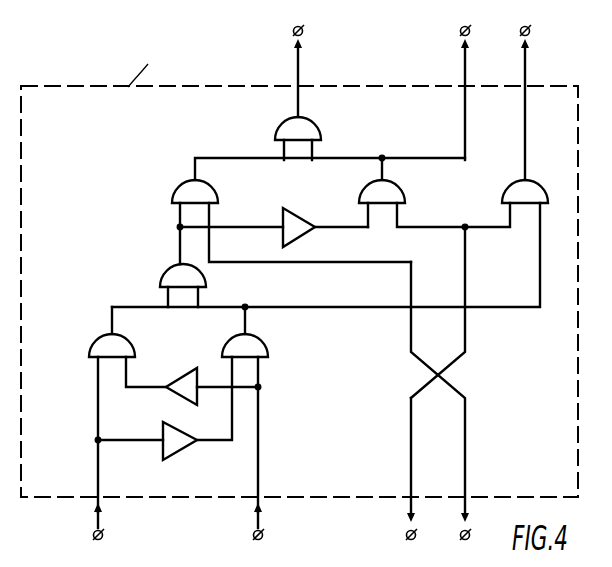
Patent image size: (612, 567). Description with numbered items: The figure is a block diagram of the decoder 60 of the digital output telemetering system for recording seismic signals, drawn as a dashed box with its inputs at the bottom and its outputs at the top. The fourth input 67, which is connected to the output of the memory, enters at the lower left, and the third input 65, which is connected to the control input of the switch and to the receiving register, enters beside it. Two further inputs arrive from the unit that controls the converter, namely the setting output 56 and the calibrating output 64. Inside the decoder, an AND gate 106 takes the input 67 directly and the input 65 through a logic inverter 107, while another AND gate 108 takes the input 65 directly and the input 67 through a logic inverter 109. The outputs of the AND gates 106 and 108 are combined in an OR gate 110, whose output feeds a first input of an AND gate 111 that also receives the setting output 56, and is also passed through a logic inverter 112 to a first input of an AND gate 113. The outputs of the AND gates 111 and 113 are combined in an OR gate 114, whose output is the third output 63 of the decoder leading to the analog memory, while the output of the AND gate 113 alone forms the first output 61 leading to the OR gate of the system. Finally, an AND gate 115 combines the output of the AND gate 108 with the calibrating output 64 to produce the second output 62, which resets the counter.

The decoder 60 is at (113, 86).
The first output 61 is at (465, 80).
The second output 62 is at (525, 82).
The third output 63 is at (298, 80).
The calibrating output 64 is at (407, 405).
The setting output 56 is at (441, 387).
The third input 65 is at (254, 507).
The fourth input 67 is at (92, 507).
The AND gate 106 is at (100, 344).
The logic inverter 107 is at (182, 380).
The AND gate 108 is at (268, 350).
The logic inverter 109 is at (180, 446).
The OR gate 110 is at (172, 270).
The AND gate 111 is at (210, 192).
The logic inverter 112 is at (300, 214).
The AND gate 113 is at (401, 195).
The OR gate 114 is at (305, 127).
The AND gate 115 is at (534, 194).